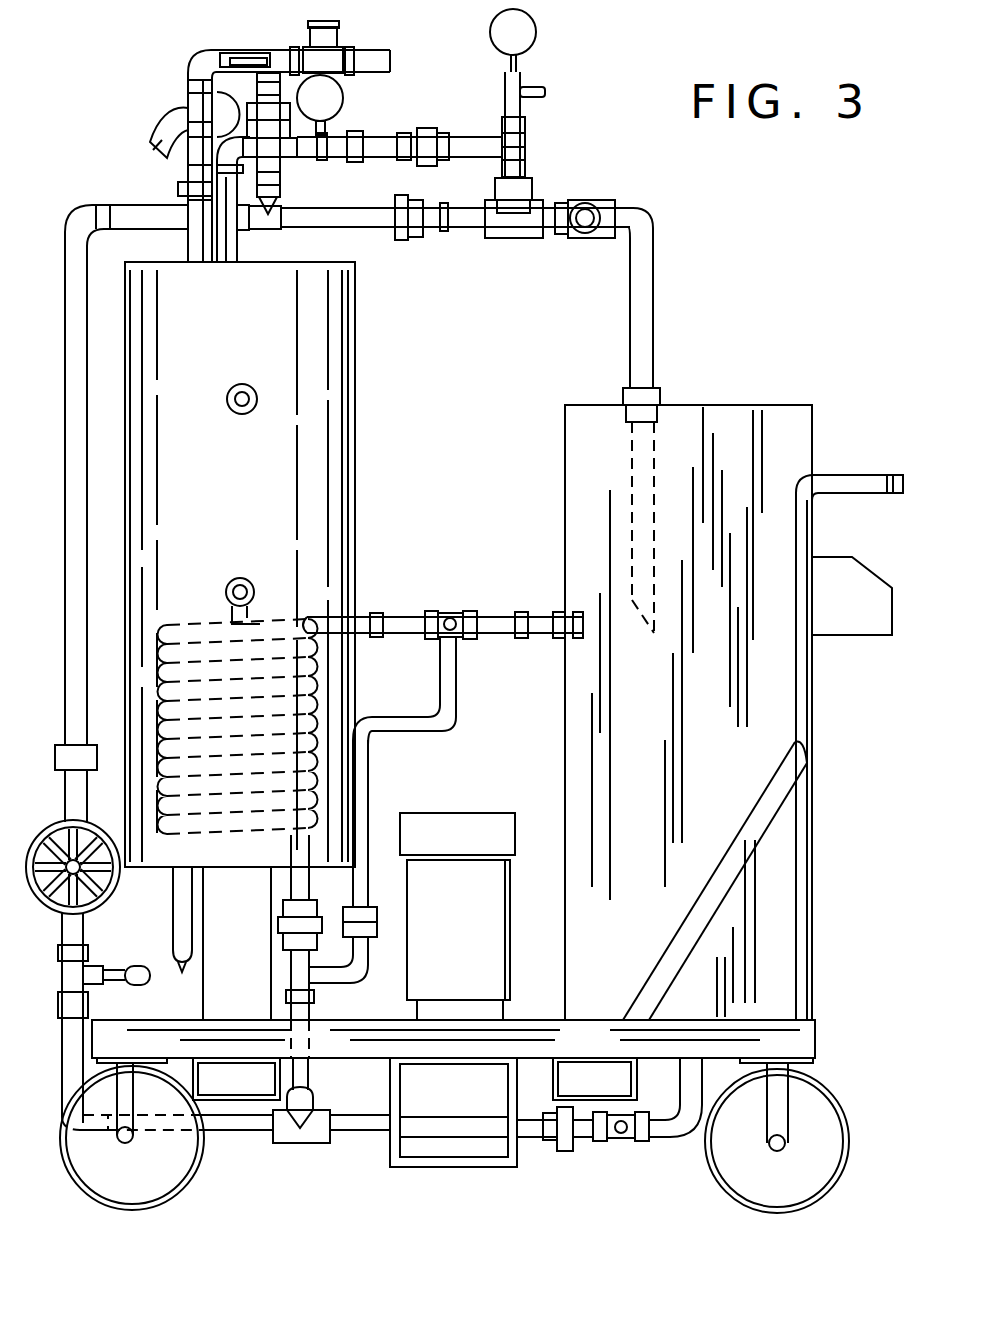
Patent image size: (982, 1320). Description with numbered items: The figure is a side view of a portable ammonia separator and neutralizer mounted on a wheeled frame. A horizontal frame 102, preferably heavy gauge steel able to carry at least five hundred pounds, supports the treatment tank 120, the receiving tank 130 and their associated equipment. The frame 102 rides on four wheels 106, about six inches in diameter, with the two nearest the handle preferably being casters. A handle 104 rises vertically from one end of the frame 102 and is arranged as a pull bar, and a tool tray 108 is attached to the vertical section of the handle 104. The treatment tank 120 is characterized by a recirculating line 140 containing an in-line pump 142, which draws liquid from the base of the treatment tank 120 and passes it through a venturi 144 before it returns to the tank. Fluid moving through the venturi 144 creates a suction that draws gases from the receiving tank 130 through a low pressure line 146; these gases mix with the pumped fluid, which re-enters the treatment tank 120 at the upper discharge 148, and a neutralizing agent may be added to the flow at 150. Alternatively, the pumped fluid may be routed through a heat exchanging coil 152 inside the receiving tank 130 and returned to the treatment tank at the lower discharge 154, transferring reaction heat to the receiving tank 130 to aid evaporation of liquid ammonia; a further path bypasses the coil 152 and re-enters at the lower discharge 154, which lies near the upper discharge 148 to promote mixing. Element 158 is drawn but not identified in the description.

The horizontal frame 102 is at (360, 1047).
The handle 104 is at (898, 475).
The wheels 106 is at (853, 1137).
The tool tray 108 is at (884, 640).
The treatment tank 120 is at (727, 403).
The receiving tank 130 is at (355, 382).
The recirculating line 140 is at (687, 1127).
The in-line pump 142 is at (437, 820).
The venturi 144 is at (510, 238).
The low pressure line 146 is at (372, 147).
The upper discharge 148 is at (630, 480).
The neutralizing agent addition point 150 is at (572, 200).
The heat exchanging coil 152 is at (183, 622).
The lower discharge 154 is at (560, 615).
The probe 158 is at (173, 897).